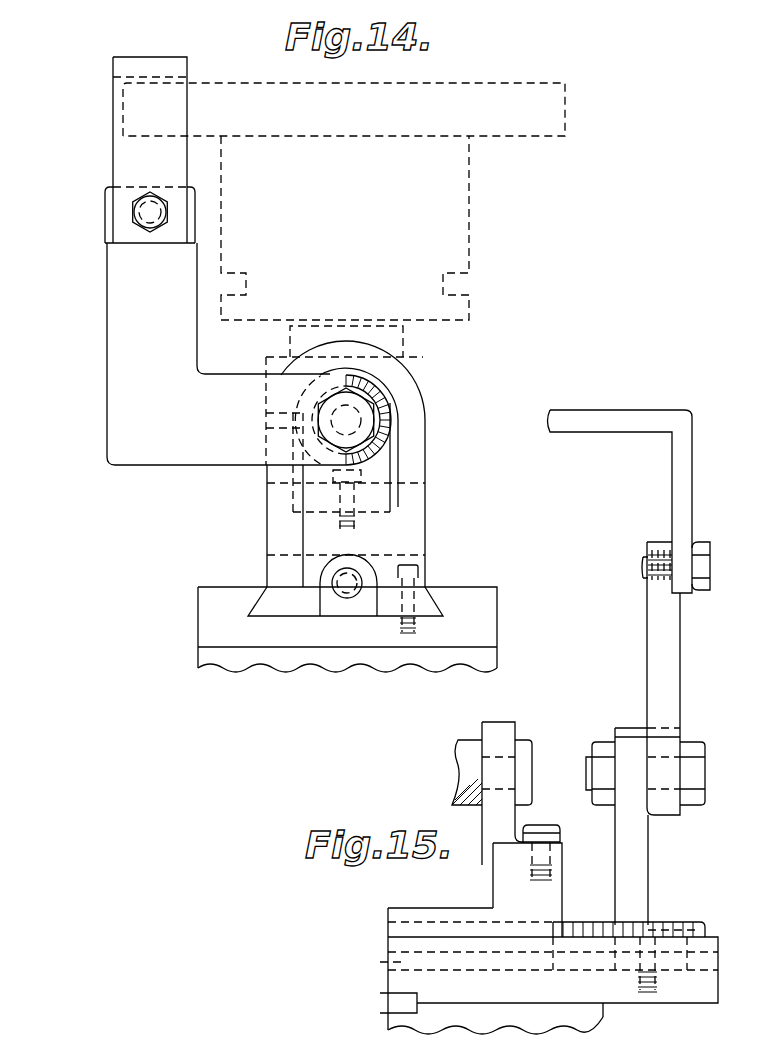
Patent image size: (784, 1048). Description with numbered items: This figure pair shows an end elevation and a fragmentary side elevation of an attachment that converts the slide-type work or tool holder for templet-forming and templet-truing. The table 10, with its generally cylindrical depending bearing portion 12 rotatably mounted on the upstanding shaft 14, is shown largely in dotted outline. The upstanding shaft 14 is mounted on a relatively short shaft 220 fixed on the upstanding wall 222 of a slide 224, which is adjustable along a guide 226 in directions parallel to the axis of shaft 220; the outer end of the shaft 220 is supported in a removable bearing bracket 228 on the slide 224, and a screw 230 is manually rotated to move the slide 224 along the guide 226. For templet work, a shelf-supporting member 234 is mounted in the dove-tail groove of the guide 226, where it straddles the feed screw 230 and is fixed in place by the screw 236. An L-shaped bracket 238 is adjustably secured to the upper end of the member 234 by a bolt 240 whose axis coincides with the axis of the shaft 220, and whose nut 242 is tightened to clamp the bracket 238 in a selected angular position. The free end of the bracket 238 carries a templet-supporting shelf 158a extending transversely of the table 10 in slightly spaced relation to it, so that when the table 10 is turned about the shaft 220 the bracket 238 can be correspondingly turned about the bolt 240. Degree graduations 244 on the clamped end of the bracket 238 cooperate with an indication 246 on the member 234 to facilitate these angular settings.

In FIG. 14, the table 10 is at (503, 81).
In FIG. 14, the depending bearing portion 12 is at (469, 230).
In FIG. 14, the upstanding shaft 14 is at (403, 340).
In FIG. 14, the templet-supporting shelf 158a is at (122, 68).
In FIG. 15, the templet-supporting shelf 158a is at (595, 415).
In FIG. 14, the shaft 220 is at (428, 446).
In FIG. 15, the shaft 220 is at (465, 748).
In FIG. 14, the upstanding wall 222 is at (407, 385).
In FIG. 15, the slide 224 is at (435, 918).
In FIG. 14, the guide 226 is at (207, 603).
In FIG. 15, the guide 226 is at (386, 989).
In FIG. 14, the bearing bracket 228 is at (396, 466).
In FIG. 15, the bearing bracket 228 is at (497, 728).
In FIG. 14, the screw 230 is at (350, 578).
In FIG. 15, the screw 230 is at (690, 922).
In FIG. 14, the shelf-supporting member 234 is at (305, 533).
In FIG. 15, the shelf-supporting member 234 is at (645, 851).
In FIG. 14, the screw 236 is at (418, 576).
In FIG. 15, the screw 236 is at (650, 993).
In FIG. 14, the L-shaped bracket 238 is at (118, 422).
In FIG. 15, the L-shaped bracket 238 is at (675, 663).
In FIG. 14, the bolt 240 is at (376, 410).
In FIG. 15, the bolt 240 is at (690, 757).
In FIG. 15, the nut 242 is at (606, 742).
In FIG. 14, the degree graduations 244 is at (367, 382).
In FIG. 14, the indication 246 is at (393, 421).